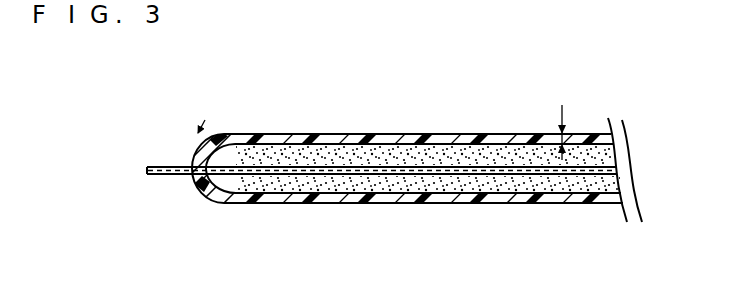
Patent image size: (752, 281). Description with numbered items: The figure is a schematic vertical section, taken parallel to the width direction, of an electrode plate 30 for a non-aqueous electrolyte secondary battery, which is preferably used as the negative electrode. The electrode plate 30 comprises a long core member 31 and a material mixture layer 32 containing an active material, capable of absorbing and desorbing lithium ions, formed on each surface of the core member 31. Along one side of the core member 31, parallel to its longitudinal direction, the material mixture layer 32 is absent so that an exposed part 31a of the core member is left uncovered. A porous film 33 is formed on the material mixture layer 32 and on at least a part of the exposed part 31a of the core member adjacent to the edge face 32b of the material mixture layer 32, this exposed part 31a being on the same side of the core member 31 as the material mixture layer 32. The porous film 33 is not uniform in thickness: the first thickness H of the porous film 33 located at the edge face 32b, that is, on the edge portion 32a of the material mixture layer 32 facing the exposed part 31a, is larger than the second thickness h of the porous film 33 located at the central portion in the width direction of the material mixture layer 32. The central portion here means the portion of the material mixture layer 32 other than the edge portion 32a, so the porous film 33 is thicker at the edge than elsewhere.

The electrode plate 30 is at (608, 112).
The core member 31 is at (401, 173).
The exposed part of the core member 31a is at (163, 165).
The material mixture layer 32 is at (515, 150).
The edge portion of the material mixture layer 32a is at (220, 218).
The edge face of the material mixture layer 32b is at (220, 218).
The porous film 33 is at (323, 202).
The first thickness H is at (228, 160).
The second thickness h is at (558, 135).